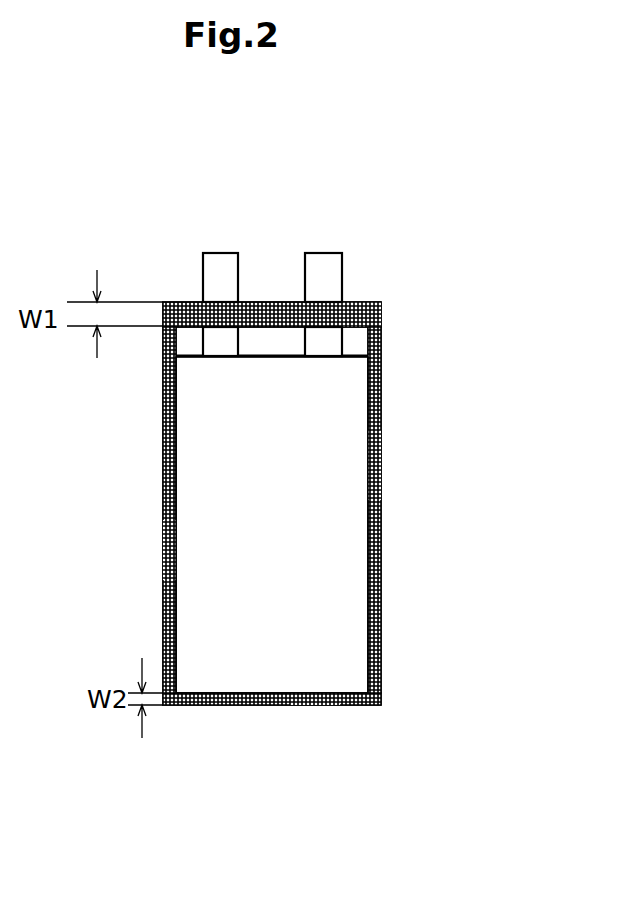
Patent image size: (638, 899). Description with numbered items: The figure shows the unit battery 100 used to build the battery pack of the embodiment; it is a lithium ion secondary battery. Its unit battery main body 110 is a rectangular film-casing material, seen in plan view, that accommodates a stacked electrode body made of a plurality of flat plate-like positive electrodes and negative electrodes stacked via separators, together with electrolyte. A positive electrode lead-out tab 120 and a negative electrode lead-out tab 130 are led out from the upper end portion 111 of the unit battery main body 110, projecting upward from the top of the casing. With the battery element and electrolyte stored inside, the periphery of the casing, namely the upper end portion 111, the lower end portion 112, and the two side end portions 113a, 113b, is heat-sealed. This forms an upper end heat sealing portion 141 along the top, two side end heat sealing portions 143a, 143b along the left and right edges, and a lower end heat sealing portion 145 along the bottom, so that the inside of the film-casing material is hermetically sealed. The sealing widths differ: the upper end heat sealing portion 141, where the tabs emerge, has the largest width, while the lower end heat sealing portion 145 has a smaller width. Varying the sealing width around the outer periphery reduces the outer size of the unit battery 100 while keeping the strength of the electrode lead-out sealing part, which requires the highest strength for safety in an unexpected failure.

The unit battery 100 is at (97, 250).
The unit battery main body 110 is at (342, 441).
The upper end portion 111 is at (384, 300).
The lower end portion 112 is at (249, 714).
The side end portion 113a is at (155, 491).
The side end portion 113b is at (386, 517).
The positive electrode lead-out tab 120 is at (217, 266).
The negative electrode lead-out tab 130 is at (320, 267).
The upper end heat sealing portion 141 is at (355, 302).
The side end heat sealing portion 143a is at (163, 553).
The side end heat sealing portion 143b is at (381, 466).
The lower end heat sealing portion 145 is at (313, 706).